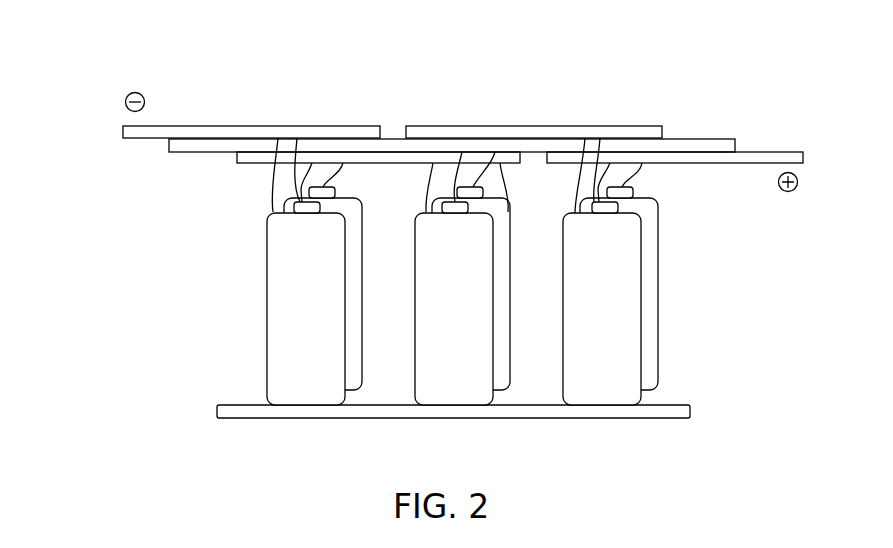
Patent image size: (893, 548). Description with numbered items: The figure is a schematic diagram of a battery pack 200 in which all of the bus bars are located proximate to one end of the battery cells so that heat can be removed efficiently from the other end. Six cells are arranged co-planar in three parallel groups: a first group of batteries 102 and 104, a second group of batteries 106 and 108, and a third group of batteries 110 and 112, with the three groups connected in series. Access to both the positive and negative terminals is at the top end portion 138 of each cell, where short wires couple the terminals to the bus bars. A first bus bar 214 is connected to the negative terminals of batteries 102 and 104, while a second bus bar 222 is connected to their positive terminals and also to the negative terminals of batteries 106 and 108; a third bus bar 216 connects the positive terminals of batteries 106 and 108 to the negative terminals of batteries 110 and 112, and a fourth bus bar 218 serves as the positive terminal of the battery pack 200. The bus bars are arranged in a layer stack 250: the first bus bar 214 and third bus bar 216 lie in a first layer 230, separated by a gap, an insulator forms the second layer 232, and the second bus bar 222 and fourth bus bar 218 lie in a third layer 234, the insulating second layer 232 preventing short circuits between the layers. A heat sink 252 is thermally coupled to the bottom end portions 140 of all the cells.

The battery pack 200 is at (150, 50).
The battery 102 is at (266, 328).
The battery 104 is at (353, 392).
The battery 106 is at (437, 391).
The battery 108 is at (508, 390).
The battery 110 is at (644, 312).
The battery 112 is at (659, 255).
The top end portion 138 is at (323, 246).
The bottom end portion 140 is at (321, 389).
The first bus bar 214 is at (203, 126).
The third bus bar 216 is at (480, 126).
The fourth bus bar 218 is at (742, 164).
The second bus bar 222 is at (402, 163).
The first layer 230 is at (118, 130).
The second layer 232 is at (162, 148).
The third layer 234 is at (230, 161).
The layer stack 250 is at (808, 130).
The heat sink 252 is at (243, 419).